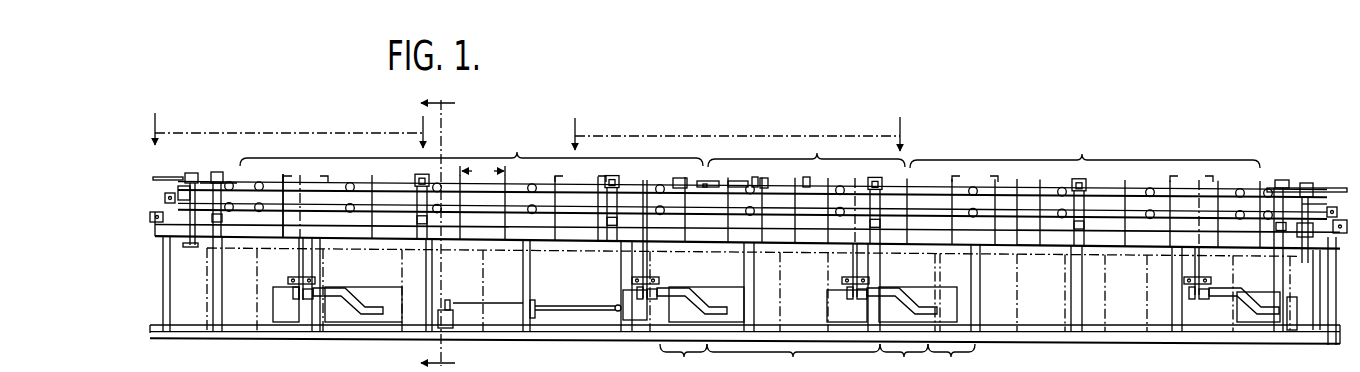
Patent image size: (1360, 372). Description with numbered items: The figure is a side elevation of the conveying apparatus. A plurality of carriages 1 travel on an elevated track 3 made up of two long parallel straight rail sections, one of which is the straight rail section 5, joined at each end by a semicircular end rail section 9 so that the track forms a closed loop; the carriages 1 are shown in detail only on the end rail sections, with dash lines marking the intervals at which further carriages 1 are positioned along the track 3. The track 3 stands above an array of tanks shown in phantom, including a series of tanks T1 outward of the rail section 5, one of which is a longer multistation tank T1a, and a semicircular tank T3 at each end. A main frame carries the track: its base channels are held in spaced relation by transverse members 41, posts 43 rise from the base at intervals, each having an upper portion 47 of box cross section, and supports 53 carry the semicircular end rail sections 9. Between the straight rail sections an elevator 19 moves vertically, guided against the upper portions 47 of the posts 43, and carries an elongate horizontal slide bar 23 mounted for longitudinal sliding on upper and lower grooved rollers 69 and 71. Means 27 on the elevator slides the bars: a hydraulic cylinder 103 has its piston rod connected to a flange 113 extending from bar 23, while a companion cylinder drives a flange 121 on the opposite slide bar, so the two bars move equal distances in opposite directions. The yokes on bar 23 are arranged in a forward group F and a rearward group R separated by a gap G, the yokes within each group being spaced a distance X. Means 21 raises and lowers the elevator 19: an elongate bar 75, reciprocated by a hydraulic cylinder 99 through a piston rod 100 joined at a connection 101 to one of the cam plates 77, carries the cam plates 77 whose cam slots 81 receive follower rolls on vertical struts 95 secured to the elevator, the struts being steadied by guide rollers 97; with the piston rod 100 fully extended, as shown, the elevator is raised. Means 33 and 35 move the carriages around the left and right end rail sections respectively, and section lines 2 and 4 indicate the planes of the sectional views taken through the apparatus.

The carriage 1 is at (1342, 184).
The section line 2- 2 is at (445, 231).
The elevated track 3 is at (1050, 272).
The section line 4- 4 is at (289, 129).
The straight rail section 5 is at (780, 244).
The semicircular end rail section 9 is at (747, 276).
The elevator 19 is at (1133, 194).
The means for raising and lowering the elevator 21 is at (934, 289).
The slide bar 23 is at (1017, 204).
The means for sliding the slide bars 27 is at (767, 176).
The means for moving carriages around left end rail section 33 is at (205, 175).
The means for moving carriages around right end rail section 35 is at (1298, 181).
The transverse member 41 is at (152, 338).
The post 43 is at (224, 269).
The upper portion of post 47 is at (217, 172).
The support 53 is at (170, 267).
The upper grooved roller 69 is at (534, 184).
The lower grooved roller 71 is at (531, 211).
The elongate bar 75 is at (277, 314).
The cam plate 77 is at (385, 287).
The cam slot 81 is at (341, 286).
The vertical strut 95 is at (299, 254).
The guide roller 97 is at (288, 279).
The hydraulic cylinder 99 is at (498, 302).
The piston rod 100 is at (572, 305).
The connection 101 is at (615, 305).
The hydraulic cylinder 103 is at (803, 177).
The flange 113 is at (741, 173).
The flange 121 is at (685, 171).
The tank T1 is at (817, 358).
The multistation tank T1a is at (793, 358).
The semicircular tank T3 is at (207, 299).
The forward group of yokes F is at (471, 149).
The gap between yoke groups G is at (806, 150).
The rearward group of yokes R is at (1085, 153).
The yoke spacing distance X is at (482, 172).